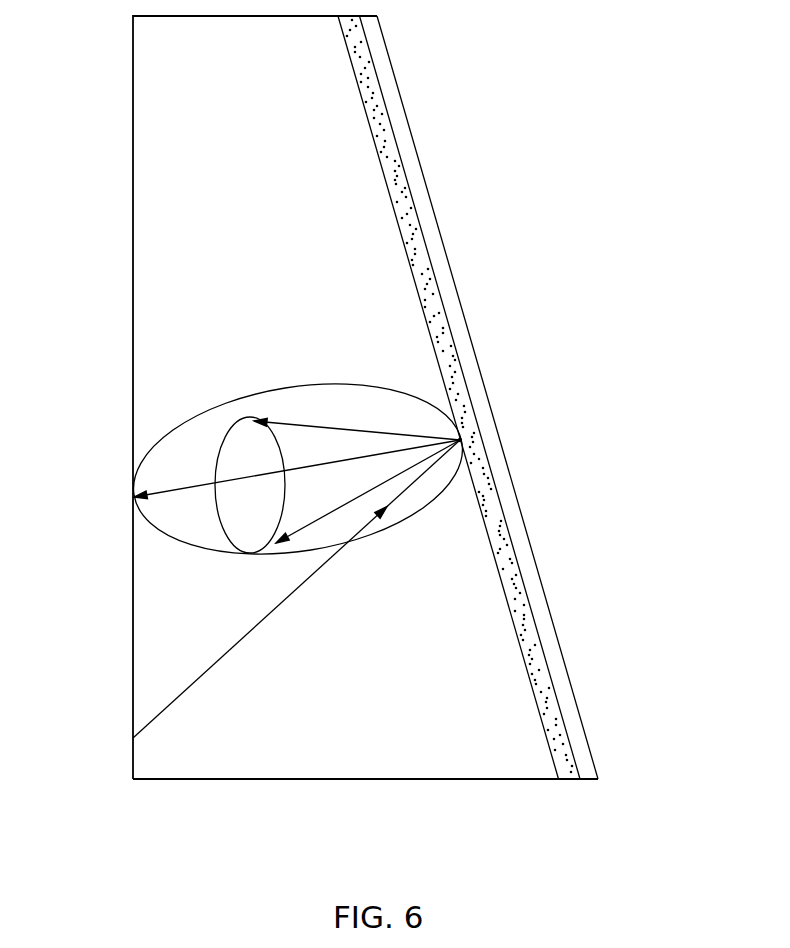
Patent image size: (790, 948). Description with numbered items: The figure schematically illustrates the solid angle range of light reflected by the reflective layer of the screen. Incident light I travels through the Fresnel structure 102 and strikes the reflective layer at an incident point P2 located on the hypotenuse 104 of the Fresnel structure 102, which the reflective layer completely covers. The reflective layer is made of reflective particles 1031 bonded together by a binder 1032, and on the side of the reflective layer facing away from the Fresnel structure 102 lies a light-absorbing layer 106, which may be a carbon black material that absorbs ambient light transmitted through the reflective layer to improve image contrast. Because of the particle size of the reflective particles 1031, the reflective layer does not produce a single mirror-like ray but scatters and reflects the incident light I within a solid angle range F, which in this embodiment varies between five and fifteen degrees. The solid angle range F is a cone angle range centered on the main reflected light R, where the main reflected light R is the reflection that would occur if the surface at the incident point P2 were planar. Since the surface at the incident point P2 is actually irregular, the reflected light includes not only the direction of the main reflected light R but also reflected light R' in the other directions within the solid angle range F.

The Fresnel structure 102 is at (158, 148).
The hypotenuse 104 is at (432, 268).
The reflective particles 1031 is at (391, 130).
The binder 1032 is at (391, 174).
The light-absorbing layer 106 is at (380, 63).
The solid angle range F is at (235, 465).
The reflected light R' is at (357, 416).
The main reflected light R is at (297, 489).
The incident point P2 is at (462, 440).
The incident light I is at (238, 642).